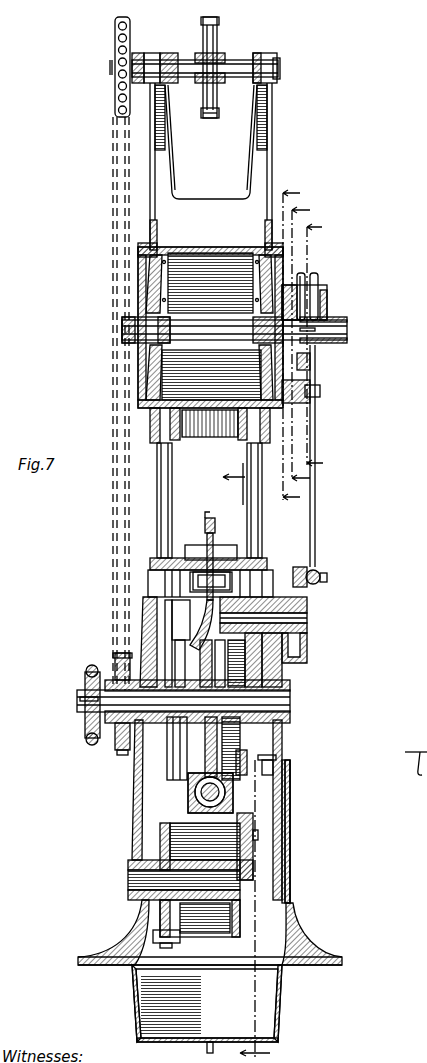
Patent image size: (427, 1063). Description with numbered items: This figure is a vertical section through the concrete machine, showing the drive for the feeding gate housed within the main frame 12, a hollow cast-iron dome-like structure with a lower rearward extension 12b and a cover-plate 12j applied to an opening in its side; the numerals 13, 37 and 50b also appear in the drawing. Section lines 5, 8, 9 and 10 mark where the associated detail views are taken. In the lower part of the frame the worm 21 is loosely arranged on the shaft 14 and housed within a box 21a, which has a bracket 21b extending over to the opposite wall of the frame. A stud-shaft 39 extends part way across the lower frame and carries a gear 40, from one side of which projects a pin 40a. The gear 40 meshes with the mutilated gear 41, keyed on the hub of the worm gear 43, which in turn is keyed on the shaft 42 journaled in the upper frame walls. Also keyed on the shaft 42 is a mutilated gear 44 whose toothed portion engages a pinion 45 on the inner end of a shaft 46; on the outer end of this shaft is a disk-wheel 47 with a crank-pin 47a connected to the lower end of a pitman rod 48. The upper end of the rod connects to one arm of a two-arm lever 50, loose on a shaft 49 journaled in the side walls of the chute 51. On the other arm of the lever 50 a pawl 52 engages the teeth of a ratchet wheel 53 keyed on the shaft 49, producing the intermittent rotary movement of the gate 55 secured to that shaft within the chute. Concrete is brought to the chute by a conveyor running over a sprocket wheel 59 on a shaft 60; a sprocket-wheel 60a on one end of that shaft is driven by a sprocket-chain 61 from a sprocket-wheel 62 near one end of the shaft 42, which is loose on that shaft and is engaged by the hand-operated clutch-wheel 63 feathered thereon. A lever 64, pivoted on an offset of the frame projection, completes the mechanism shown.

The section line 5— 5 is at (234, 480).
The section line 8— 8 is at (288, 342).
The section line 9— 9 is at (302, 344).
The section line 10— 10 is at (304, 357).
The main frame 12 is at (295, 930).
The lower rearward extension 12b is at (198, 580).
The cover-plate 12j is at (293, 881).
The bottom cup 13 is at (285, 1000).
The shaft 14 is at (188, 790).
The worm 21 is at (190, 803).
The box 21a is at (250, 760).
The bracket 21b is at (272, 768).
The wall 37 is at (255, 852).
The stud-shaft 39 is at (128, 885).
The gear 40 is at (228, 928).
The pin 40a is at (250, 837).
The mutilated gear 41 is at (170, 766).
The shaft 42 is at (292, 700).
The worm gear 43 is at (177, 693).
The mutilated gear 44 is at (265, 670).
The pinion 45 is at (235, 590).
The shaft 46 is at (309, 610).
The disk-wheel 47 is at (309, 638).
The crank-pin 47a is at (328, 577).
The pitman rod 48 is at (316, 520).
The shaft 49 is at (347, 328).
The 2-arm lever 50 is at (328, 295).
The pin 50b is at (302, 278).
The chute 51 is at (150, 200).
The pawl 52 is at (305, 275).
The ratchet wheel 53 is at (312, 362).
The gate 55 is at (210, 402).
The sprocket wheel 59 is at (203, 40).
The shaft 60 is at (243, 60).
The sprocket-wheel 60a is at (113, 100).
The sprocket-chain 61 is at (113, 505).
The sprocket-wheel 62 is at (117, 660).
The clutch-wheel 63 is at (88, 672).
The lever 64 is at (208, 517).